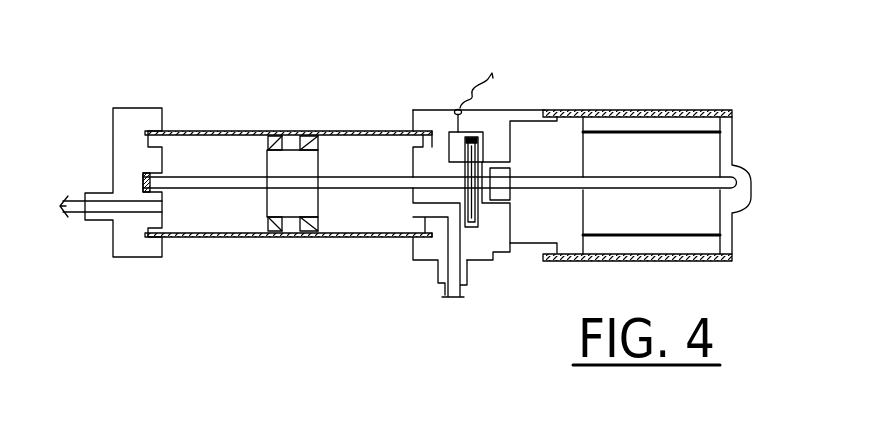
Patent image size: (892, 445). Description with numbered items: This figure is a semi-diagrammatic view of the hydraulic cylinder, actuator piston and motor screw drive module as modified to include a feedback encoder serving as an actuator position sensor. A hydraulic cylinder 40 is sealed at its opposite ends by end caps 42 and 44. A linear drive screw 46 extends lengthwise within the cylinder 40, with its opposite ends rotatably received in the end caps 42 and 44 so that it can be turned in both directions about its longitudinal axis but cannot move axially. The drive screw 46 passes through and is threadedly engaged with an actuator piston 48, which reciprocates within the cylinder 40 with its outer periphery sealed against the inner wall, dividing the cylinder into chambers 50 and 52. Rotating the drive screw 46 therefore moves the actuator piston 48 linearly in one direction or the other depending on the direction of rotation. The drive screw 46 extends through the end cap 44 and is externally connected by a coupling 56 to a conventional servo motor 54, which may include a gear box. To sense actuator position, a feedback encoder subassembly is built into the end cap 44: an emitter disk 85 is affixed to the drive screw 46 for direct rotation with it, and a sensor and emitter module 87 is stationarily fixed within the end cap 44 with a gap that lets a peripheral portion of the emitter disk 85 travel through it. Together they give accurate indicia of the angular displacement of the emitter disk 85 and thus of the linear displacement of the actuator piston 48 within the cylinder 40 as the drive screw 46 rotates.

The hydraulic cylinder 40 is at (228, 128).
The end cap 42 is at (135, 106).
The end cap 44 is at (437, 108).
The linear drive screw 46 is at (223, 183).
The actuator piston 48 is at (283, 160).
The chamber 50 is at (193, 147).
The chamber 52 is at (343, 140).
The servo motor 54 is at (670, 143).
The coupling 56 is at (503, 175).
The emitter disk 85 is at (482, 145).
The sensor and emitter module 87 is at (440, 156).